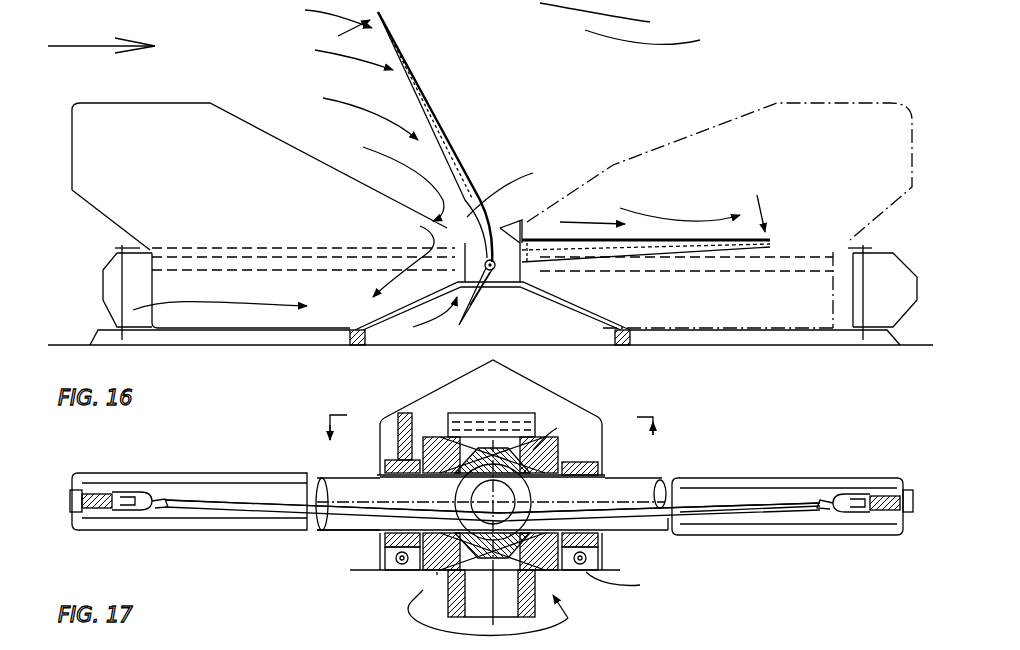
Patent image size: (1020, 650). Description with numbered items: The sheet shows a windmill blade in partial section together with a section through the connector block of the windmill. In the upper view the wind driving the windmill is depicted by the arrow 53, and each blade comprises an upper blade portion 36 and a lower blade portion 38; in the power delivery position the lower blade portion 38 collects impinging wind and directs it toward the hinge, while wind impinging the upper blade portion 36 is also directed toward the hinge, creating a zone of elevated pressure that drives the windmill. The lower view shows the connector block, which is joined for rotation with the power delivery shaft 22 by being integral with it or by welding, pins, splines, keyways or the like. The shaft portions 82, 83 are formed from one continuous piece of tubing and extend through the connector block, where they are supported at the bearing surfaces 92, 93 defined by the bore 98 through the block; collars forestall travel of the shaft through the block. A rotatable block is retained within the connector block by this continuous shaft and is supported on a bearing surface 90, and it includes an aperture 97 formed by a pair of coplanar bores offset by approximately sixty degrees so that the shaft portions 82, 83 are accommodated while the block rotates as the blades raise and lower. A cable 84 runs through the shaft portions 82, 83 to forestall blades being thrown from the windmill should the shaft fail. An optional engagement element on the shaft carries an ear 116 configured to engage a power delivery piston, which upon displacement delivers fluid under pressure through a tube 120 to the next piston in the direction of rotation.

In FIG. 16, the arrow 53 is at (83, 46).
In FIG. 16, the upper blade portion 36 is at (430, 100).
In FIG. 16, the lower blade portion 38 is at (480, 297).
In FIG. 17, the ear 116 is at (380, 422).
In FIG. 17, the bearing surface 90 is at (455, 445).
In FIG. 17, the aperture 97 is at (533, 460).
In FIG. 17, the bearing surface 93 is at (545, 485).
In FIG. 17, the bearing surface 92 is at (383, 521).
In FIG. 17, the bore 98 is at (492, 506).
In FIG. 17, the shaft portion 82 is at (192, 531).
In FIG. 17, the shaft portion 83 is at (797, 536).
In FIG. 17, the cable 84 is at (703, 516).
In FIG. 17, the tube 120 is at (637, 586).
In FIG. 17, the power delivery shaft 22 is at (560, 595).